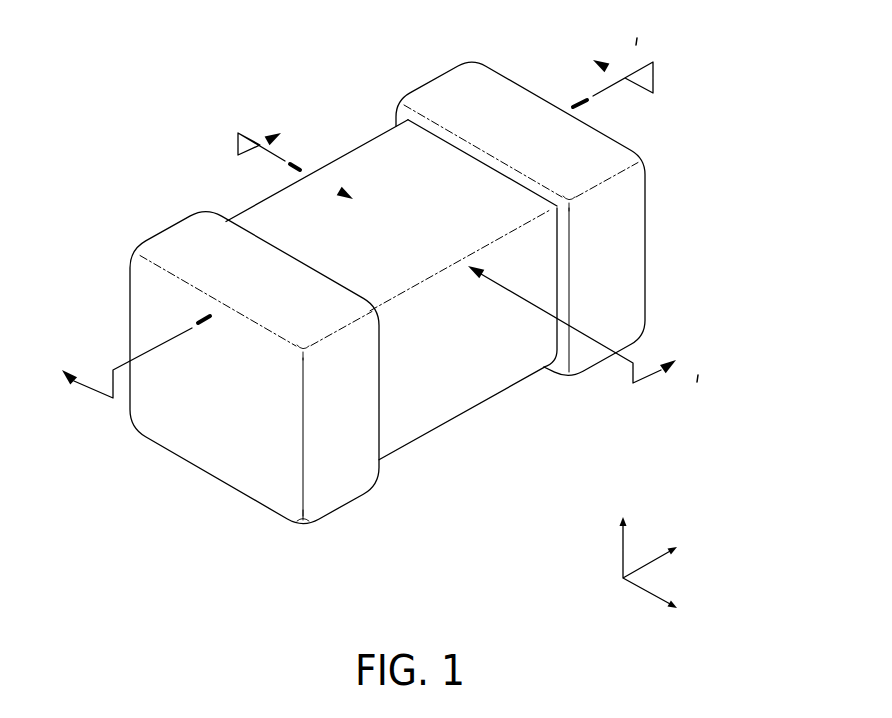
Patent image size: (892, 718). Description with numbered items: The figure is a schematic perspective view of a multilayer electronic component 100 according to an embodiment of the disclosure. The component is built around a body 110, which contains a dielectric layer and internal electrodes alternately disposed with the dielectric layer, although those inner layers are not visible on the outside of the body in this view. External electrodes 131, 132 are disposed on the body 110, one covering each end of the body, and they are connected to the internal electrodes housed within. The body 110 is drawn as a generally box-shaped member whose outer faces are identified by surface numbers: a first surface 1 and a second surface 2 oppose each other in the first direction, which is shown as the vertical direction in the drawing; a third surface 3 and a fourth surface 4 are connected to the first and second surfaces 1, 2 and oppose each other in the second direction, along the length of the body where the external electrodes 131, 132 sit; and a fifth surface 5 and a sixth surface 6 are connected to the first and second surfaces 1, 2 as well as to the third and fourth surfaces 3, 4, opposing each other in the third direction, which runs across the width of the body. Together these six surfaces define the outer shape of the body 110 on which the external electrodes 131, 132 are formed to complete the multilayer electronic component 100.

The multilayer electronic component 100 is at (167, 29).
The body 110 is at (267, 230).
The external electrode 131 is at (187, 243).
The external electrode 132 is at (444, 98).
The first surface 1 is at (428, 384).
The second surface 2 is at (403, 176).
The third surface 3 is at (222, 428).
The fourth surface 4 is at (594, 236).
The fifth surface 5 is at (485, 353).
The sixth surface 6 is at (350, 204).